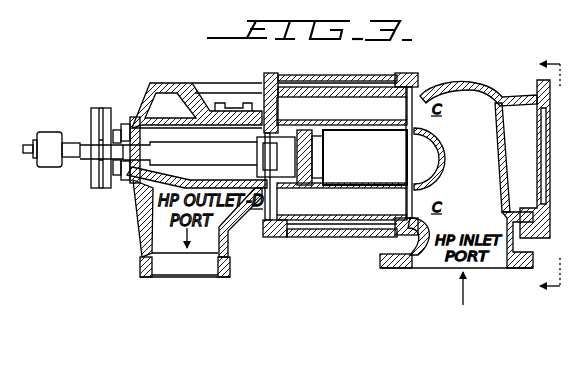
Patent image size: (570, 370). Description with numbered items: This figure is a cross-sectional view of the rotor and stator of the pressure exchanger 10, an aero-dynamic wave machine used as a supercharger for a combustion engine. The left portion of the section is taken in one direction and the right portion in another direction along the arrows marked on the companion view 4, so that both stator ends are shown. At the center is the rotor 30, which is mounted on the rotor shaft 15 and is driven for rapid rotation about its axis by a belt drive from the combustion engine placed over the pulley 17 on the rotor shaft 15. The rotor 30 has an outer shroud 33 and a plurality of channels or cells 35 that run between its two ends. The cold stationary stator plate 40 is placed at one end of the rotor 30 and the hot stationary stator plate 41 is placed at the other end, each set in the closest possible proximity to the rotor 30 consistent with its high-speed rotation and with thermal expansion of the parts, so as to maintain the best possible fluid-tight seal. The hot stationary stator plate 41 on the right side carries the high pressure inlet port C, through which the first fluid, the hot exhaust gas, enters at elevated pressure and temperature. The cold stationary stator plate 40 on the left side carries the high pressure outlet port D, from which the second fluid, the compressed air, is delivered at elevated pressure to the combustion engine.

The pressure exchanger 10 is at (410, 72).
The rotor shaft 15 is at (97, 150).
The pulley 17 is at (103, 108).
The rotor 30 is at (333, 200).
The outer shroud 33 is at (347, 95).
The channels or cells 35 is at (380, 120).
The cold stationary stator plate 40 is at (265, 78).
The hot stationary stator plate 41 is at (423, 90).
The section line 4- 4 is at (538, 173).